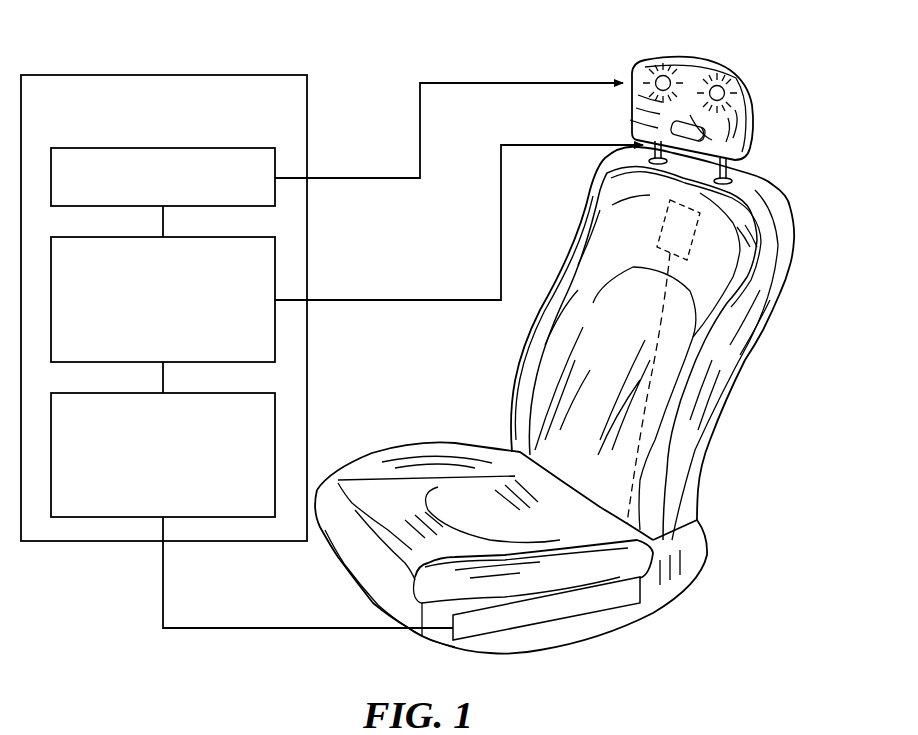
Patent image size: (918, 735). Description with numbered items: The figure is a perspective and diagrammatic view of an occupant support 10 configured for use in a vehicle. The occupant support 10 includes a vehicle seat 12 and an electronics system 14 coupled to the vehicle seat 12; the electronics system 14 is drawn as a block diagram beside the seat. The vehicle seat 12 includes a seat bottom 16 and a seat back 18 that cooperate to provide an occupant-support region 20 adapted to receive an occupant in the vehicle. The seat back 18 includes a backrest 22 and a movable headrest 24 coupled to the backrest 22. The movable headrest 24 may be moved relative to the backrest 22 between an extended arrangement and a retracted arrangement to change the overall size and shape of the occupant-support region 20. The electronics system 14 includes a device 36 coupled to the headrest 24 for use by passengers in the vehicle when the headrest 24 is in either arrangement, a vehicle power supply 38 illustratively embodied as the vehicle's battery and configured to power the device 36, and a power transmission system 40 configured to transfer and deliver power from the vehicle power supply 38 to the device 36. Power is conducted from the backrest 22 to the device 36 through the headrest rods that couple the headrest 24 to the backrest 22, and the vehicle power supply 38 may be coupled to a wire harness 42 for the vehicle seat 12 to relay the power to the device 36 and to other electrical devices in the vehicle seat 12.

The occupant support 10 is at (832, 54).
The vehicle seat 12 is at (829, 199).
The electronics system 14 is at (160, 75).
The seat bottom 16 is at (722, 555).
The seat back 18 is at (771, 162).
The occupant-support region 20 is at (510, 340).
The backrest 22 is at (750, 377).
The movable headrest 24 is at (735, 61).
The device 36 is at (275, 197).
The vehicle power supply 38 is at (275, 414).
The power transmission system 40 is at (275, 341).
The wire harness 42 is at (547, 633).